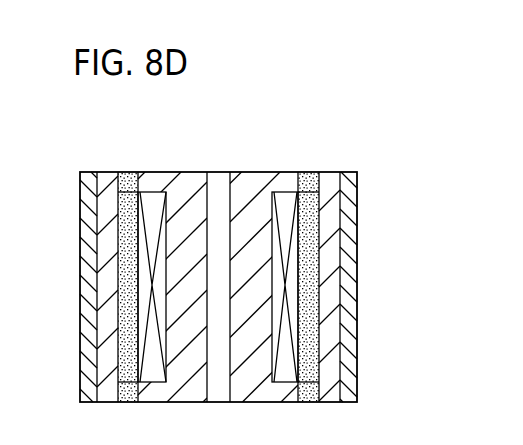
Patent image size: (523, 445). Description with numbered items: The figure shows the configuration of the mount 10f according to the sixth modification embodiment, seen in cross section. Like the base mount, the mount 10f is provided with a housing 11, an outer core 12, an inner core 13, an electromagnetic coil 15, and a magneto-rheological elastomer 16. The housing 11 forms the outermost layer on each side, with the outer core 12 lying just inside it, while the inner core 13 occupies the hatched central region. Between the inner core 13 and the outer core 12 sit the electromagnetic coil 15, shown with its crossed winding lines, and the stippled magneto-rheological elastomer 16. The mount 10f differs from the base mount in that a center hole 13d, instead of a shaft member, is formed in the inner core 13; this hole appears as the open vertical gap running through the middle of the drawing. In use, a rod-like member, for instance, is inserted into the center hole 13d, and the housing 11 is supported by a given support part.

The mount 10f is at (355, 128).
The housing 11 is at (353, 231).
The outer core 12 is at (328, 337).
The inner core 13 is at (252, 182).
The center hole 13d is at (212, 183).
The electromagnetic coil 15 is at (285, 282).
The magneto-rheological elastomer 16 is at (125, 245).